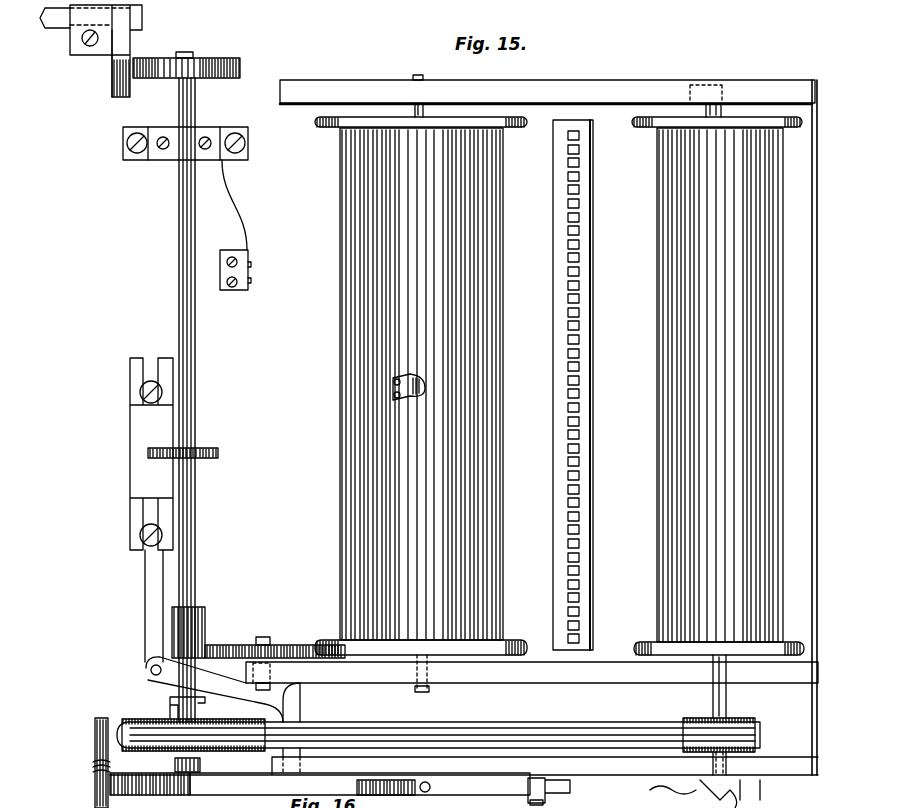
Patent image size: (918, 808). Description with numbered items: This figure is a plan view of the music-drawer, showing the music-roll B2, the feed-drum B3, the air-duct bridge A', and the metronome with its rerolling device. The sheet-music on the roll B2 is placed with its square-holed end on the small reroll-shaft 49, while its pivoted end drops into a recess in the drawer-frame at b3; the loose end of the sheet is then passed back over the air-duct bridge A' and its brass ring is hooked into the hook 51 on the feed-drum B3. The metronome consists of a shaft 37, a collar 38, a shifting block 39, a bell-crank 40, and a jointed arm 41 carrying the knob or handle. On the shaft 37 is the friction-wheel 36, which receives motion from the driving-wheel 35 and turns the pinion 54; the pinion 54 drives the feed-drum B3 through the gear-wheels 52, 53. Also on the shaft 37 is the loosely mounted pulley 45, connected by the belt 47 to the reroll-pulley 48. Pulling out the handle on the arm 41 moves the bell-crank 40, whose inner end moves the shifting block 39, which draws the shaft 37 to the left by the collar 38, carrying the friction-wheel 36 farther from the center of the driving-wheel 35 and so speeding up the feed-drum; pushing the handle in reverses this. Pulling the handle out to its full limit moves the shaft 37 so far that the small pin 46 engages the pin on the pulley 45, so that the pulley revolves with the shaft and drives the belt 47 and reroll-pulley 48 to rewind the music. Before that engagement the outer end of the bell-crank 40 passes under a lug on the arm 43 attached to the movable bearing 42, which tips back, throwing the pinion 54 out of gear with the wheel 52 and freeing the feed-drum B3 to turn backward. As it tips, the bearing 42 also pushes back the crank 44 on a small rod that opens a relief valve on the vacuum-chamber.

The driving-wheel 35 is at (111, 75).
The friction-wheel 36 is at (186, 58).
The shaft 37 is at (192, 364).
The collar 38 is at (212, 454).
The shifting block 39 is at (140, 431).
The bell-crank 40 is at (300, 698).
The jointed arm 41 is at (478, 790).
The movable bearing 42 is at (244, 773).
The arm 43 is at (188, 790).
The crank 44 is at (95, 744).
The pulley 45 is at (140, 713).
The pin 46 is at (198, 707).
The belt 47 is at (490, 731).
The reroll-pulley 48 is at (700, 728).
The reroll-shaft 49 is at (725, 712).
The hook 51 is at (400, 375).
The gear-wheel 52 is at (288, 645).
The gear-wheel 53 is at (400, 646).
The pinion 54 is at (205, 621).
The air-duct bridge A' is at (551, 385).
The music-roll B2 is at (718, 386).
The feed-drum B3 is at (378, 433).
The recess in the drawer-frame b3 is at (723, 57).